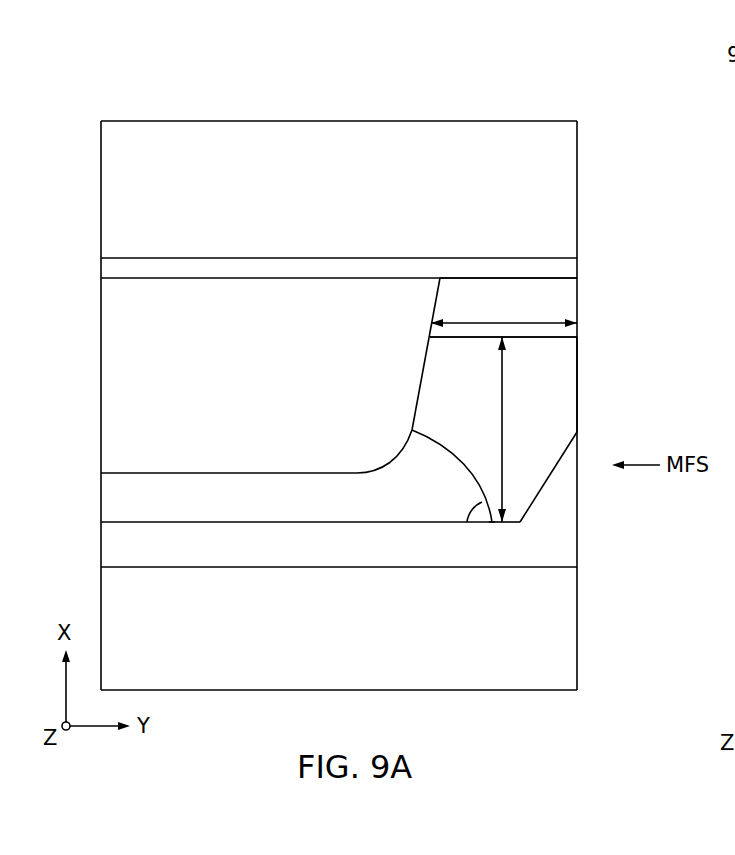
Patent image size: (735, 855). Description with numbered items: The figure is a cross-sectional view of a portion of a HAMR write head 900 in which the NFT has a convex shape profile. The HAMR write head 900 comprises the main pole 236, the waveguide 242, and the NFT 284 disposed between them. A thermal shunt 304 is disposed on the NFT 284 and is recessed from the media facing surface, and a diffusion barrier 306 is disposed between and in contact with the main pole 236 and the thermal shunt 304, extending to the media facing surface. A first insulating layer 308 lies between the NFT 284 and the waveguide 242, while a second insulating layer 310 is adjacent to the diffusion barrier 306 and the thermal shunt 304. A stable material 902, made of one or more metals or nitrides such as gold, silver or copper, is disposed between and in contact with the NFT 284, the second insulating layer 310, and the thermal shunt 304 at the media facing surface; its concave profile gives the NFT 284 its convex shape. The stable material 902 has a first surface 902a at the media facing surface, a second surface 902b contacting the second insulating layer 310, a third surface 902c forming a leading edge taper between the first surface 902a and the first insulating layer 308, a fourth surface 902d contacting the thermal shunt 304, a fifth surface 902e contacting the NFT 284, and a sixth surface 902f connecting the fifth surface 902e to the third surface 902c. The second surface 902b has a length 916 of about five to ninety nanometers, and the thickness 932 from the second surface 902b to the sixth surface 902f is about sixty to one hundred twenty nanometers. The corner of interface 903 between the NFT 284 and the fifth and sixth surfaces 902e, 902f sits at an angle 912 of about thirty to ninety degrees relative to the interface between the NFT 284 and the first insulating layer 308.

The HAMR write head 900 is at (140, 80).
The main pole 236 is at (358, 231).
The diffusion barrier 306 is at (563, 268).
The thermal shunt 304 is at (240, 368).
The second insulating layer 310 is at (493, 307).
The length 916 is at (535, 323).
The stable material 902 is at (559, 386).
The first surface 902a is at (578, 387).
The second surface 902b is at (563, 339).
The third surface 902c is at (537, 497).
The fourth surface 902d is at (418, 395).
The fifth surface 902e is at (439, 443).
The sixth surface 902f is at (517, 524).
The thickness 932 is at (503, 429).
The NFT 284 is at (271, 509).
The first insulating layer 308 is at (293, 557).
The waveguide 242 is at (320, 655).
The angle 912 is at (470, 514).
The corner of interface 903 is at (491, 524).